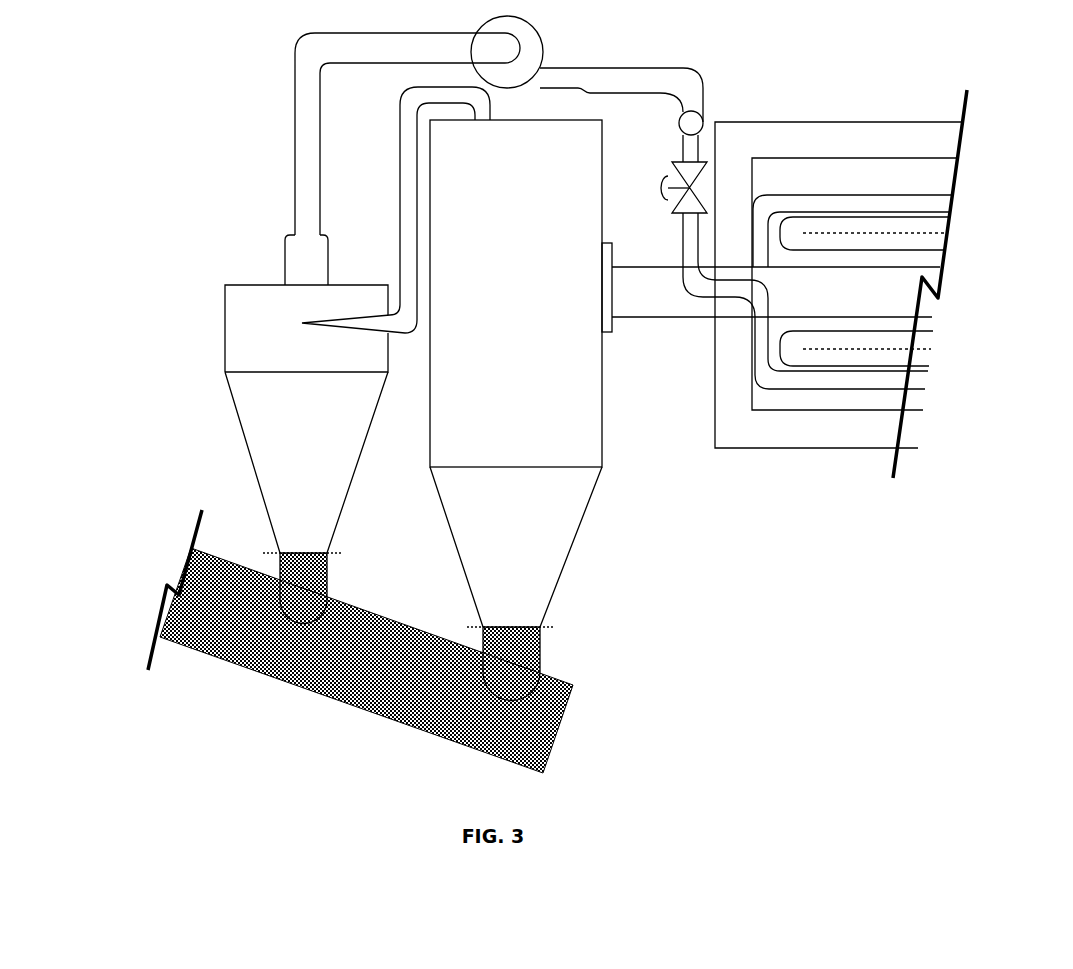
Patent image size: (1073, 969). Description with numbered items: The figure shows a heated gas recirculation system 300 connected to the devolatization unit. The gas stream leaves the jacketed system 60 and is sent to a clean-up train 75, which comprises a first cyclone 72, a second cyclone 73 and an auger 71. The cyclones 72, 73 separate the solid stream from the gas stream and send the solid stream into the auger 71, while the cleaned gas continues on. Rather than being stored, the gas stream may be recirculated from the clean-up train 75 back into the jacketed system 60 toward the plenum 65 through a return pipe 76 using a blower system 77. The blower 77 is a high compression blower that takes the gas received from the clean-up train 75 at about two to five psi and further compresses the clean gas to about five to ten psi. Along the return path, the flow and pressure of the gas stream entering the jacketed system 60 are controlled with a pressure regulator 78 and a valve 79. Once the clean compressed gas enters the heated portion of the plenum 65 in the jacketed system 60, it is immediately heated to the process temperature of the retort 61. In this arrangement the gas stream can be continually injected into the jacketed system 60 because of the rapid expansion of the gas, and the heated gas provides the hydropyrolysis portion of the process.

The heated gas recirculation system 300 is at (188, 129).
The jacketed system 60 is at (958, 176).
The retort 61 is at (678, 305).
The plenum 65 is at (900, 363).
The auger 71 is at (567, 708).
The first cyclone 72 is at (605, 421).
The second cyclone 73 is at (240, 287).
The clean-up train 75 is at (156, 593).
The return pipe 76 is at (290, 74).
The blower system 77 is at (543, 68).
The pressure regulator 78 is at (704, 120).
The valve 79 is at (673, 181).